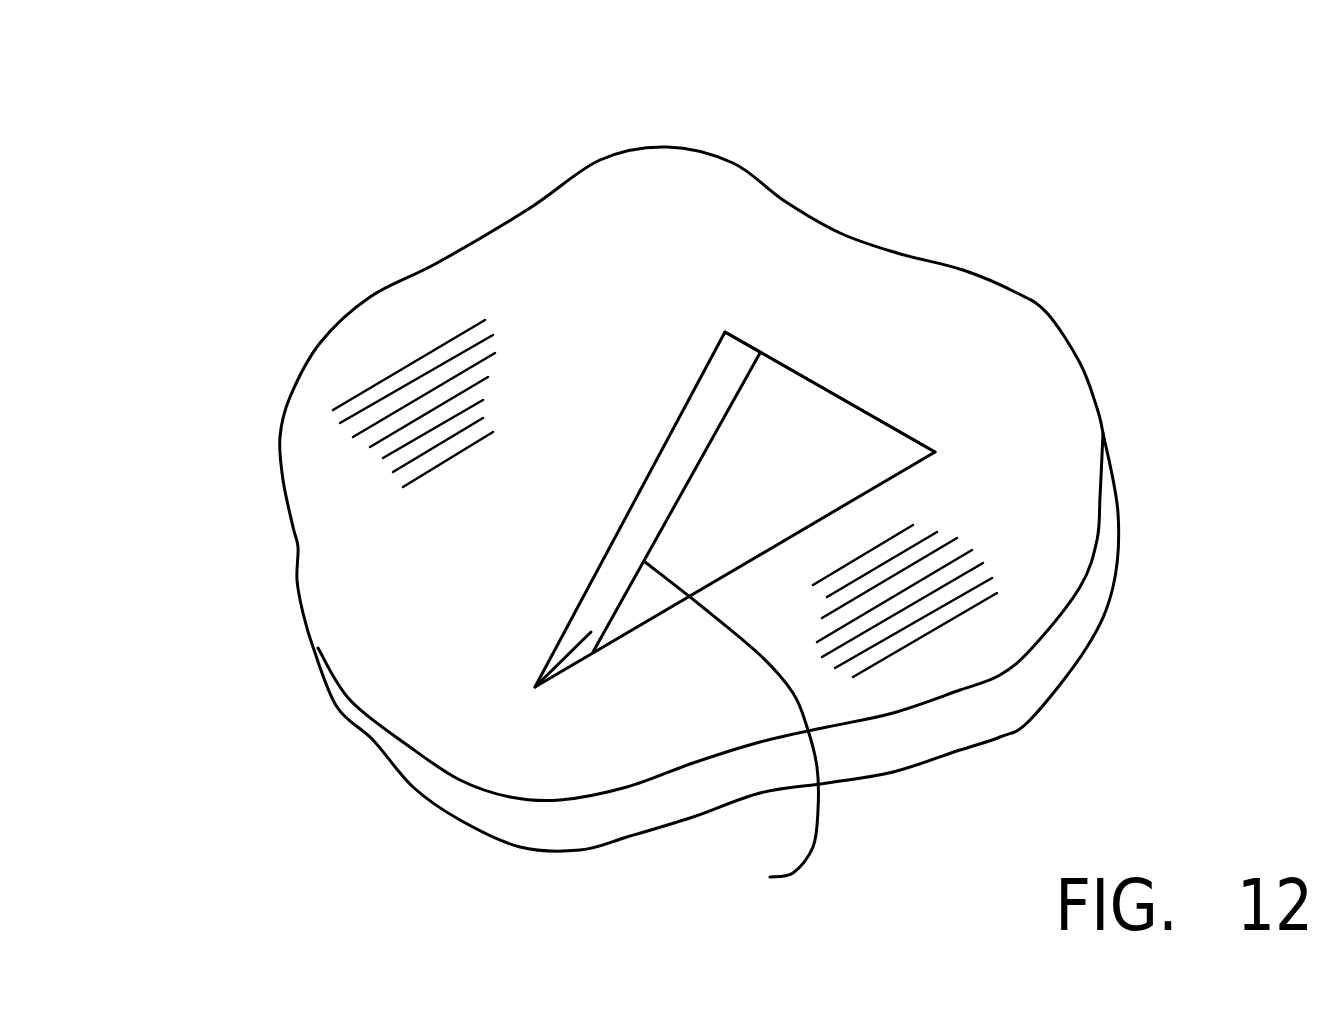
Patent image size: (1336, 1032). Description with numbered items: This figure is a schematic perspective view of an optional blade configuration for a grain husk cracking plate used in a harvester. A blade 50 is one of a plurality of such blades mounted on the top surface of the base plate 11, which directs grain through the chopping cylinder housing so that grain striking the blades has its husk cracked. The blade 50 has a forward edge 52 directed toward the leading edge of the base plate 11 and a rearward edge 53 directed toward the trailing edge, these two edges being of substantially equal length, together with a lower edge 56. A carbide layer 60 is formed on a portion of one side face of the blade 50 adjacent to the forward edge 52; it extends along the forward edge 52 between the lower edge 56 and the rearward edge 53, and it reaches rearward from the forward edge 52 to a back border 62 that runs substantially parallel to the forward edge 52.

The base plate 11 is at (593, 242).
The blade 50 is at (681, 387).
The forward edge 52 is at (591, 582).
The rearward edge 53 is at (793, 368).
The lower edge 56 is at (1085, 586).
The carbide layer 60 is at (533, 690).
The back border 62 is at (731, 732).